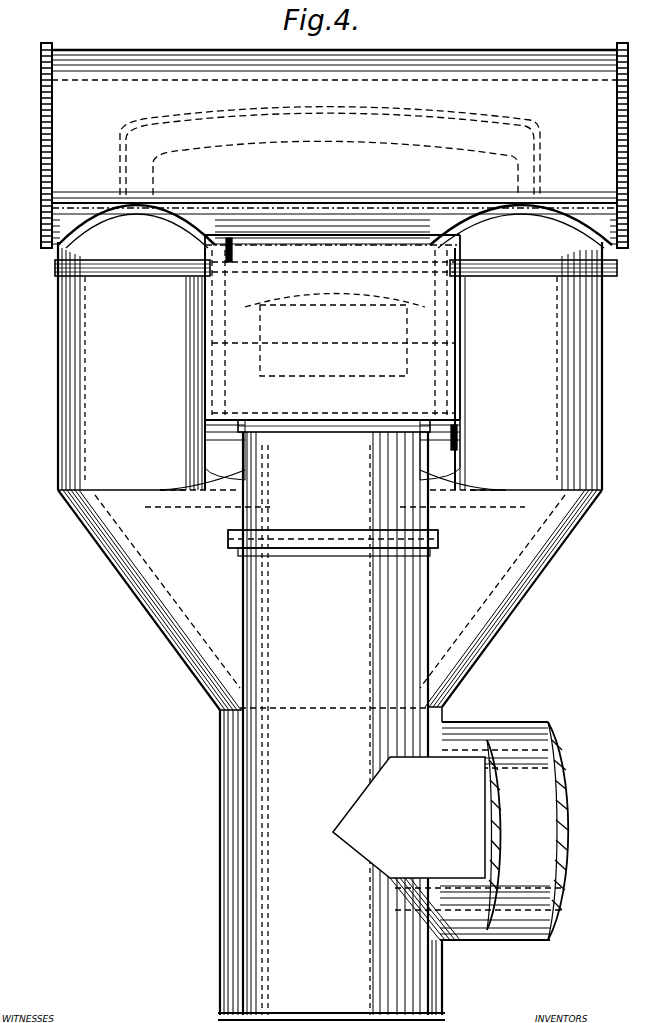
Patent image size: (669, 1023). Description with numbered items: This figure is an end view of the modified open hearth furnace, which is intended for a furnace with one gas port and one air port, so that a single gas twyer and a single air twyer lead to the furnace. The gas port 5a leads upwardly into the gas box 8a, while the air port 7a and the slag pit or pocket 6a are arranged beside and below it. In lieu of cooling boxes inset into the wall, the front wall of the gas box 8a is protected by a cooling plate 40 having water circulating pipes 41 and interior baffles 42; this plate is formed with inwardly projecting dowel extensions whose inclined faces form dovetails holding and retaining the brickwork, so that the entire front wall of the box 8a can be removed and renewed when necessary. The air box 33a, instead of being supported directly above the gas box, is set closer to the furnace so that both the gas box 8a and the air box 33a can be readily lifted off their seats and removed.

The air box 33a is at (334, 145).
The gas box 8a is at (328, 235).
The water circulating pipes 41 is at (233, 247).
The interior baffles 42 is at (320, 306).
The cooling plate 40 is at (333, 340).
The air port 7a is at (336, 457).
The gas port 5a is at (331, 720).
The slag pit 6a is at (450, 823).